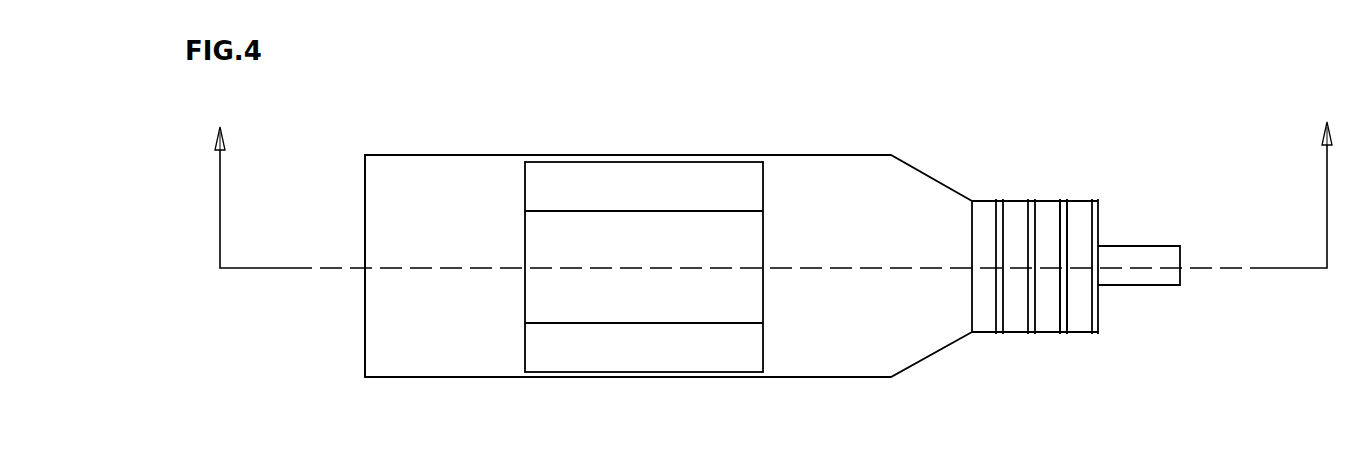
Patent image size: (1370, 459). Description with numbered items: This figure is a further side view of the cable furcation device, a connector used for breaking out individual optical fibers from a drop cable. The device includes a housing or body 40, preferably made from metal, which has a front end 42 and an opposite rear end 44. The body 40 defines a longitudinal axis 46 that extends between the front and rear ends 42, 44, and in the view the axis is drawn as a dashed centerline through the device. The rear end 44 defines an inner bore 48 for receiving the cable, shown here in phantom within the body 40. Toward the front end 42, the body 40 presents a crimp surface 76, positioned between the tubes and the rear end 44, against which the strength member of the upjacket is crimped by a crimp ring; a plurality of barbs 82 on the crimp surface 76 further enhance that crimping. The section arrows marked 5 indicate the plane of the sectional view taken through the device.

The section line 5- 5 is at (771, 180).
The body 40 is at (830, 154).
The front end 42 is at (1175, 246).
The rear end 44 is at (365, 156).
The longitudinal axis 46 is at (1198, 267).
The inner bore 48 is at (620, 253).
The crimp surface 76 is at (1048, 199).
The barbs 82 is at (1060, 332).